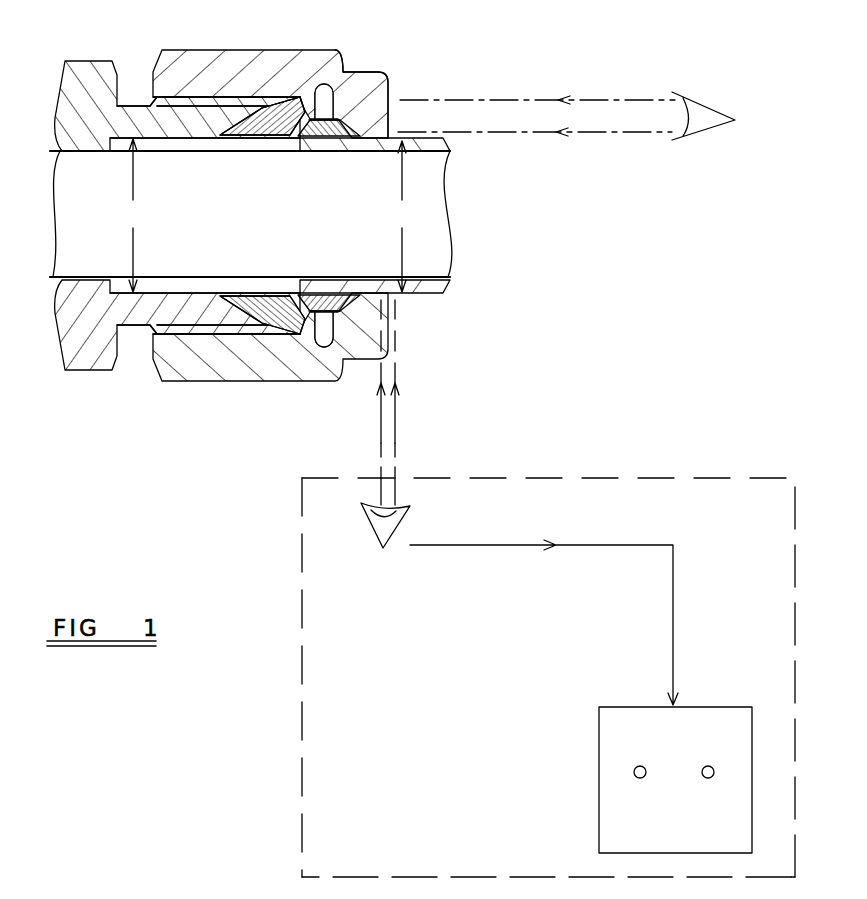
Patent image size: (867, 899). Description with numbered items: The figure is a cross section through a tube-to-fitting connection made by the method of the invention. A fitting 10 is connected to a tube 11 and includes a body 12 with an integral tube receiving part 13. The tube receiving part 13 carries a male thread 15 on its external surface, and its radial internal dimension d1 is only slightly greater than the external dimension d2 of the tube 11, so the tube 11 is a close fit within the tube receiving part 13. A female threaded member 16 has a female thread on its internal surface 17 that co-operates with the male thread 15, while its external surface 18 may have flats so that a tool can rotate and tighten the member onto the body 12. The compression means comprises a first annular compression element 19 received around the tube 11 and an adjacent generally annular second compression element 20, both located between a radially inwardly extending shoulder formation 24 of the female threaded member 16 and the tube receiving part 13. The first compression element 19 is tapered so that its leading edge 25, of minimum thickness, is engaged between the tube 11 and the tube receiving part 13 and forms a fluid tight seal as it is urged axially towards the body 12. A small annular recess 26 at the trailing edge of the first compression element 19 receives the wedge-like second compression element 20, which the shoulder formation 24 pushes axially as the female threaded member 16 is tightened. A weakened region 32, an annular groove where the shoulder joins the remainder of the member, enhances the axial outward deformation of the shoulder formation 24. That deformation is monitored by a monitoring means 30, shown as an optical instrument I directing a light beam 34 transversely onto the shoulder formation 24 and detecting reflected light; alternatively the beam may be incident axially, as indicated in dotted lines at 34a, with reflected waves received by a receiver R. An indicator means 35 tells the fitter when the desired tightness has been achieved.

The fitting 10 is at (171, 412).
The tube 11 is at (435, 243).
The body 12 is at (87, 381).
The tube receiving part 13 is at (190, 322).
The male thread 15 is at (173, 100).
The female threaded member 16 is at (300, 74).
The internal surface 17 is at (210, 102).
The external surface 18 is at (204, 49).
The first annular compression element 19 is at (262, 142).
The second compression element 20 is at (333, 148).
The radially inwardly extending shoulder formation 24 is at (380, 126).
The leading edge 25 is at (230, 306).
The annular recess 26 is at (297, 150).
The monitoring means 30 is at (563, 480).
The weakened region 32 is at (318, 348).
The light beam 34 is at (397, 422).
The axially incident light beam 34a is at (622, 75).
The indicator means 35 is at (612, 730).
The radial internal dimension d1 is at (133, 215).
The external dimension d2 is at (399, 216).
The receiver R is at (693, 133).
The optical instrument I is at (384, 532).